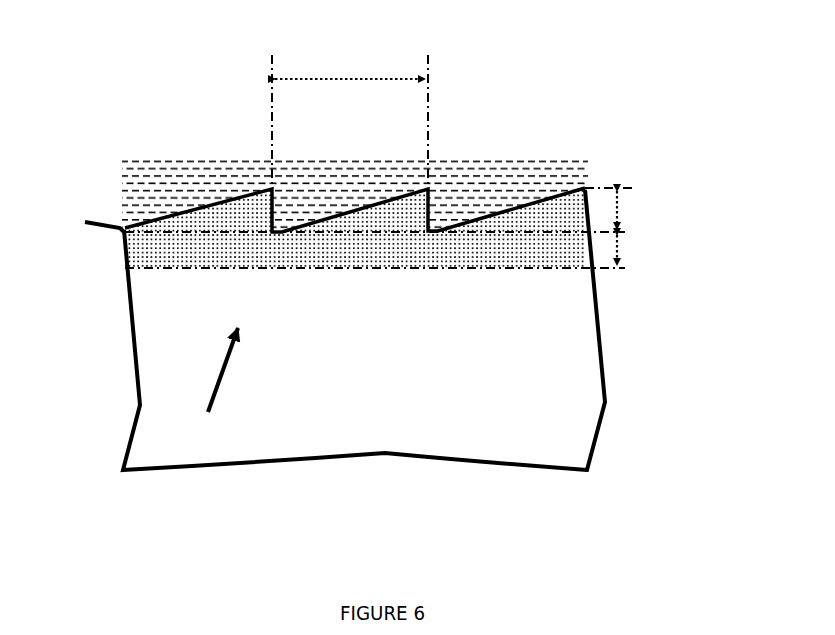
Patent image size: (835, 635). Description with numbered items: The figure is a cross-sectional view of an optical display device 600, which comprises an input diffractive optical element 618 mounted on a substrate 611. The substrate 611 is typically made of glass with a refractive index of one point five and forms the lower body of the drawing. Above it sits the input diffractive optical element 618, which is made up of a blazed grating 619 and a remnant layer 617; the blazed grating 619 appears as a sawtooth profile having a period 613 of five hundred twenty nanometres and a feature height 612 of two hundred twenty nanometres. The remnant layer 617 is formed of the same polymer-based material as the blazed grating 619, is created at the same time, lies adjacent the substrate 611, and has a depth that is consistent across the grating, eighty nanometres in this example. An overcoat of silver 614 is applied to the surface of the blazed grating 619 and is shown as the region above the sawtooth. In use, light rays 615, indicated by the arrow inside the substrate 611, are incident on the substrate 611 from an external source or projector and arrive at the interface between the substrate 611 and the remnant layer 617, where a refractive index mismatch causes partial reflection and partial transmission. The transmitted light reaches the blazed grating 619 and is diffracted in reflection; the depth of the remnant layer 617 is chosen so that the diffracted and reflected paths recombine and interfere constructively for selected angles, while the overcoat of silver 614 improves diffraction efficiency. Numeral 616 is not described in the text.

The optical display device 600 is at (410, 262).
The substrate 611 is at (173, 432).
The feature height 612 is at (638, 210).
The period 613 is at (350, 122).
The overcoat of silver 614 is at (152, 157).
The light rays 615 is at (208, 400).
The sawtooth layer 616 is at (143, 250).
The remnant layer 617 is at (638, 250).
The input diffractive optical element 618 is at (705, 204).
The blazed grating 619 is at (71, 219).